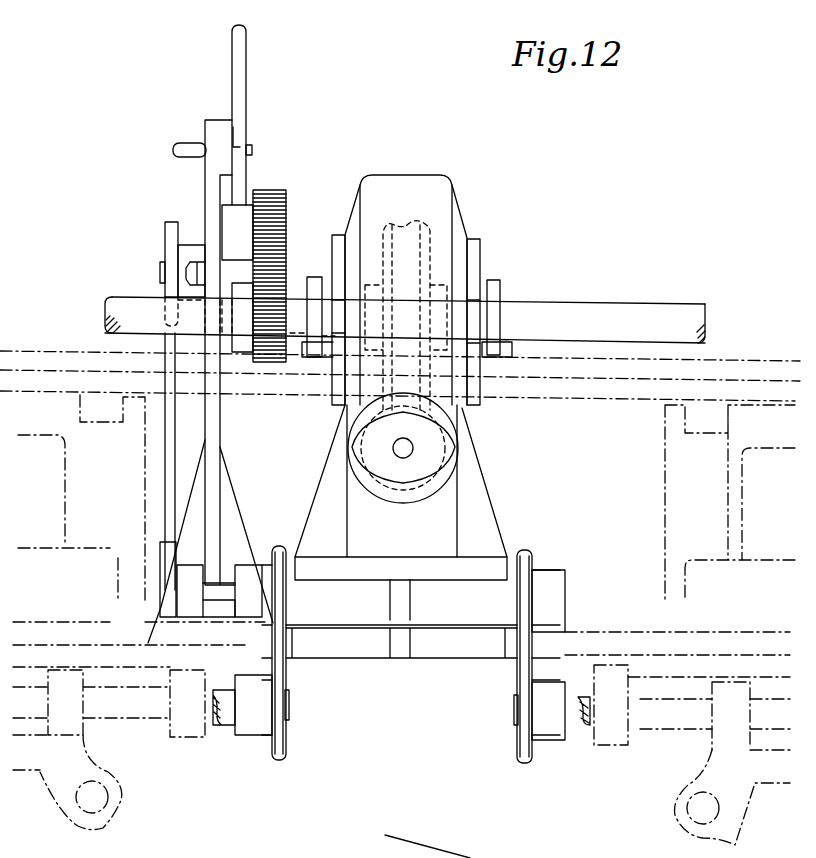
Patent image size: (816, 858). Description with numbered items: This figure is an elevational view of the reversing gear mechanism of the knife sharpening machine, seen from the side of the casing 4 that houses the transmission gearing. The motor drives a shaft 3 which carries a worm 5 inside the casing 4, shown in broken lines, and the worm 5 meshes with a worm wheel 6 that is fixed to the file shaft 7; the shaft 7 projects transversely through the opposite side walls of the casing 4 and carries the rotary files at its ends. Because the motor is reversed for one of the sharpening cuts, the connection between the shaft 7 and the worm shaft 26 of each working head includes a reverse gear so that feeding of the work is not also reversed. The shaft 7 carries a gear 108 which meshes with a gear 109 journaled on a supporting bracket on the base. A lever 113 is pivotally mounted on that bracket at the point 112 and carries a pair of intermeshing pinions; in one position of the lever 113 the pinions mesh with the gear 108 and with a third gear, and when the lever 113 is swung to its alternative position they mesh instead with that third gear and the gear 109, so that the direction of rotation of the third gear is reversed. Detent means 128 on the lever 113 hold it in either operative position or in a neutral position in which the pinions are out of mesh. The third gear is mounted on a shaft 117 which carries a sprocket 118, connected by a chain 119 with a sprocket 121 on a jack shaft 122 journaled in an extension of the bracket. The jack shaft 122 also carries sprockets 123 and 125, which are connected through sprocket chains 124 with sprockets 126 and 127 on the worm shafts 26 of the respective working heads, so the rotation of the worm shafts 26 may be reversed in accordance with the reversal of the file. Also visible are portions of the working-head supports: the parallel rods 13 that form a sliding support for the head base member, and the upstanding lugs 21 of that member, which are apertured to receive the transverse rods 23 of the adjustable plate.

The shaft 3 is at (400, 456).
The casing 4 is at (418, 177).
The worm 5 is at (410, 482).
The worm wheel 6 is at (430, 230).
The shaft 7 is at (112, 296).
The rods 13 is at (108, 796).
The lugs 21 is at (108, 704).
The rods 23 is at (676, 730).
The worm shaft 26 is at (218, 722).
The gear 108 is at (272, 364).
The gear 109 is at (286, 196).
The pivot point 112 is at (190, 272).
The lever 113 is at (247, 114).
The shaft 117 is at (162, 279).
The sprocket 118 is at (165, 238).
The chain 119 is at (164, 478).
The sprocket 121 is at (160, 548).
The jack shaft 122 is at (220, 602).
The sprocket 123 is at (296, 598).
The sprocket chains 124 is at (286, 680).
The sprocket 125 is at (516, 600).
The sprocket 126 is at (290, 750).
The sprocket 127 is at (517, 745).
The detent means 128 is at (175, 150).